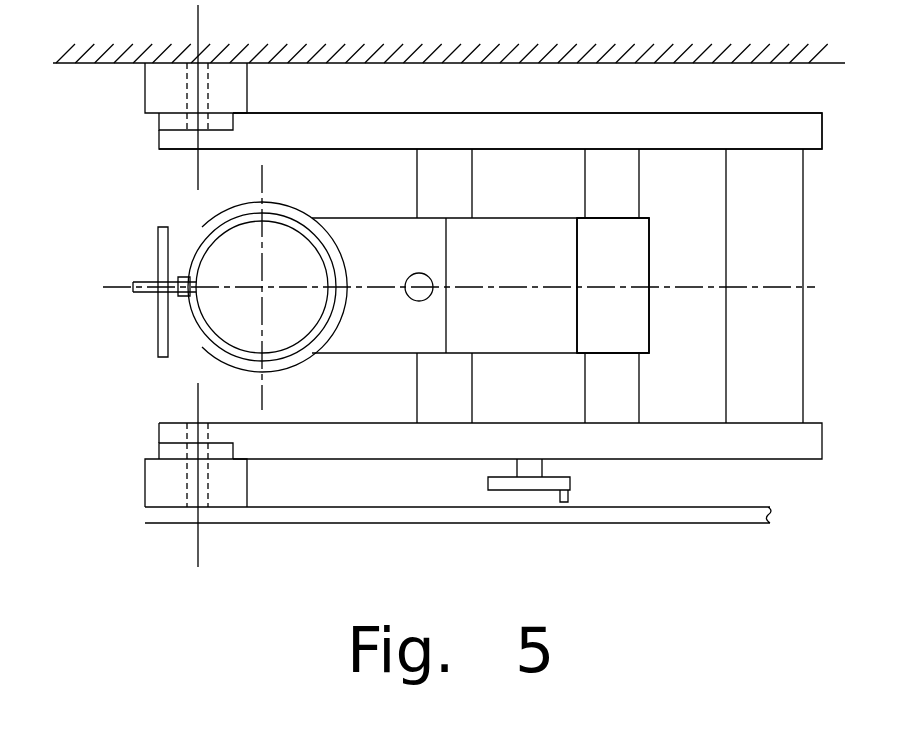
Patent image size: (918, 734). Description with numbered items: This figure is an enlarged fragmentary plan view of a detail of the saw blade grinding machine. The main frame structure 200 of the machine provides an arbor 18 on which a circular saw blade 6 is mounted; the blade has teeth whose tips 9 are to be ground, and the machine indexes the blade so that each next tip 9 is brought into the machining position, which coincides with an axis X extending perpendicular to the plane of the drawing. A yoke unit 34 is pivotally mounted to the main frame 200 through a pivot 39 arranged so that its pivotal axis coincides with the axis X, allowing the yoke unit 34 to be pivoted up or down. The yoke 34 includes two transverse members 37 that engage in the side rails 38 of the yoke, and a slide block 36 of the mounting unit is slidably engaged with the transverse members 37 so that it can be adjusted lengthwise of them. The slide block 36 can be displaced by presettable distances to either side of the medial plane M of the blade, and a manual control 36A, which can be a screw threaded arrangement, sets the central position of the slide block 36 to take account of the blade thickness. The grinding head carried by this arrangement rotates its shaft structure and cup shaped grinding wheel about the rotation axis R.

The main frame structure 200 is at (560, 33).
The pivot 39 is at (226, 90).
The yoke unit 34 is at (359, 131).
The side rails 38 is at (482, 130).
The transverse members 37 is at (440, 391).
The slide block 36 is at (620, 241).
The medial plane M is at (683, 290).
The manual control 36A is at (570, 480).
The circular saw blade 6 is at (148, 282).
The tips 9 is at (190, 275).
The arbor 18 is at (160, 331).
The rotation axis R is at (262, 290).
The axis X is at (198, 28).